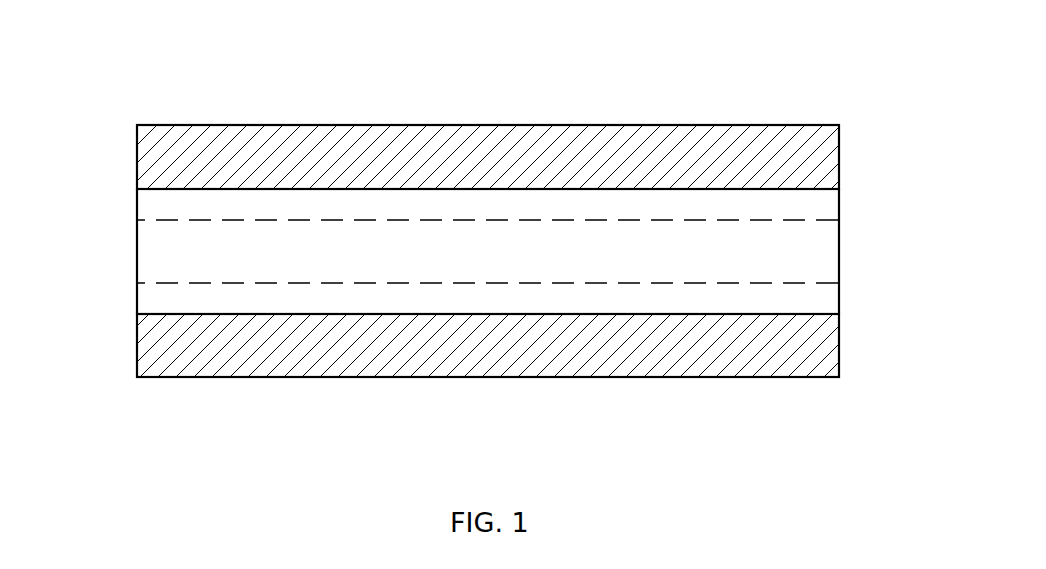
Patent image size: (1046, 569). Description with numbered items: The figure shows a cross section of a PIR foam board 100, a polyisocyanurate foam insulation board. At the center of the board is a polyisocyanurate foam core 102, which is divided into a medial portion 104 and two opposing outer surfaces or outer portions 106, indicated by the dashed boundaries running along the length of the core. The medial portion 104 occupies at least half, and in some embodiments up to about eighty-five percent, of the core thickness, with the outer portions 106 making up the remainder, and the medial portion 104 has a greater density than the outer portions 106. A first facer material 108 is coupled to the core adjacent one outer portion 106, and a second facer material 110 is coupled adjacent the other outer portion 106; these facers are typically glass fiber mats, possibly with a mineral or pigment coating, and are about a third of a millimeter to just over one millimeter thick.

The PIR foam board 100 is at (183, 84).
The polyisocyanurate foam core 102 is at (135, 189).
The medial portion 104 is at (847, 251).
The outer portions 106 is at (467, 203).
The first facer material 108 is at (842, 157).
The second facer material 110 is at (842, 345).